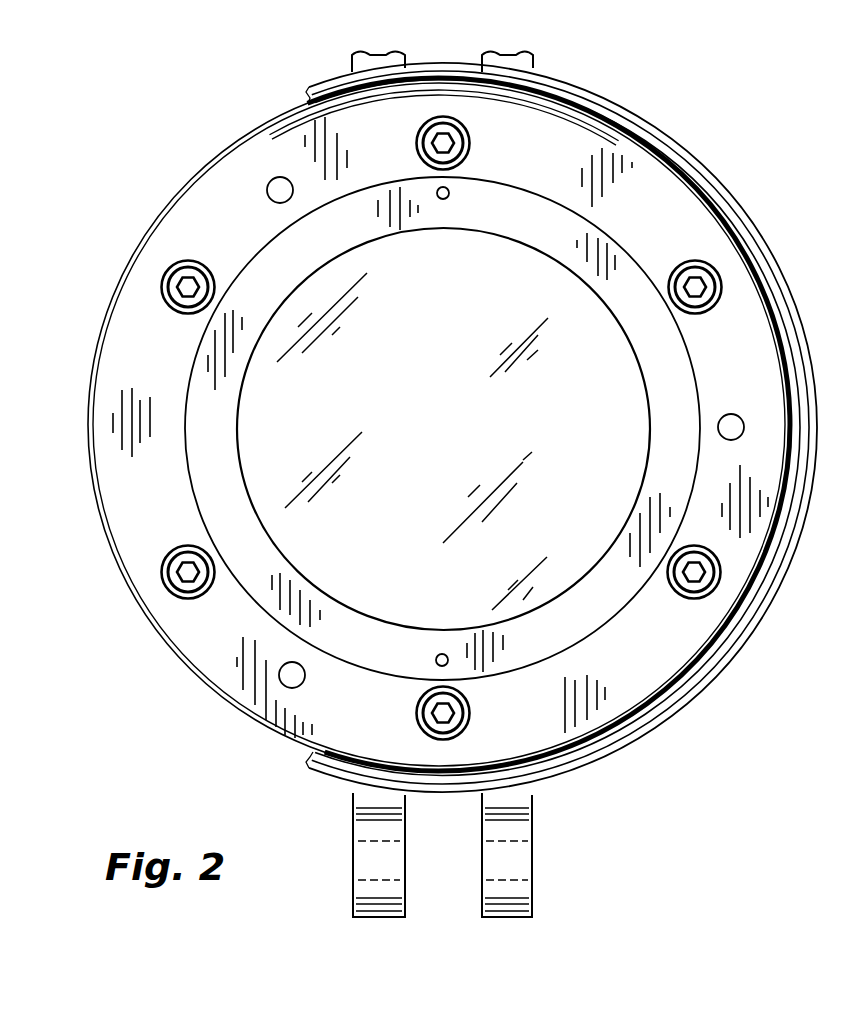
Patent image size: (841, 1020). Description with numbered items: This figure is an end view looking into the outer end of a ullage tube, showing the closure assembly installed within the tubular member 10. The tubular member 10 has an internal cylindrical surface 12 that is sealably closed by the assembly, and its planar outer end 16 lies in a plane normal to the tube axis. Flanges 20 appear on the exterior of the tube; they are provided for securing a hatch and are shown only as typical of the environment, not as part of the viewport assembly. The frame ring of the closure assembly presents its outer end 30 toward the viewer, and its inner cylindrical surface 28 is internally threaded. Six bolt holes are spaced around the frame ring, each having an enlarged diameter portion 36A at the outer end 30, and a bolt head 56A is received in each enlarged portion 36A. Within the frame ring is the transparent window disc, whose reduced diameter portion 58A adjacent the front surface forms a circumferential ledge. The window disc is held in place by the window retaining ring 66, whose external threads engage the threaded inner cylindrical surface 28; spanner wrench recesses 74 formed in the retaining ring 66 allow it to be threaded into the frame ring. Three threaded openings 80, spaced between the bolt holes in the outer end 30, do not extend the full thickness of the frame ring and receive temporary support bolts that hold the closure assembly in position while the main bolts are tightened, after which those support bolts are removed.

The tubular member 10 is at (657, 129).
The internal cylindrical surface 12 is at (718, 207).
The outer end 16 is at (697, 166).
The flanges 20 is at (347, 70).
The inner cylindrical surface 28 is at (692, 356).
The outer end 30 is at (640, 243).
The enlarged diameter portion 36A is at (470, 143).
The head 56A is at (424, 723).
The reduced diameter portion 58A is at (440, 423).
The window retaining ring 66 is at (658, 421).
The spanner wrench recesses 74 is at (443, 200).
The threaded openings 80 is at (268, 194).